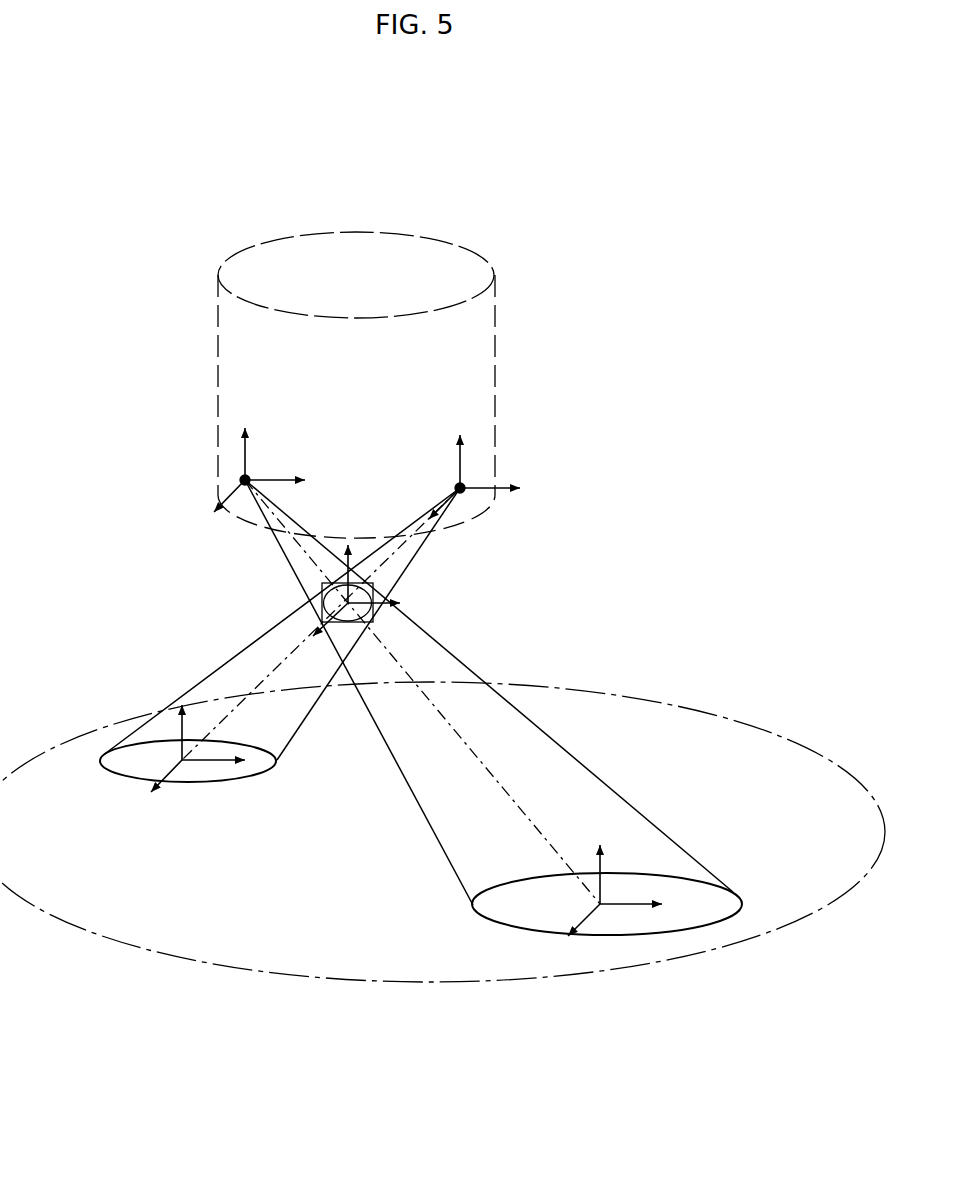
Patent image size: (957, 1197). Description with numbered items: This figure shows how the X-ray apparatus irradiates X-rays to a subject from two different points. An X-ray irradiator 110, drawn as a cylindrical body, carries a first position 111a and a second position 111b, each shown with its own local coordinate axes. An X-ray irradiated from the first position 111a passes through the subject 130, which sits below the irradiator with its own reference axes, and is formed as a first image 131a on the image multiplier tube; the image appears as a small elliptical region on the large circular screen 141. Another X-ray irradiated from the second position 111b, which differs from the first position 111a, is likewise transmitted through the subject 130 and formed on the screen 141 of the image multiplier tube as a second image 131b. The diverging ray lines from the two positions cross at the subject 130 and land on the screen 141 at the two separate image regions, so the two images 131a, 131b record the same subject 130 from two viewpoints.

The X-ray irradiator 110 is at (496, 305).
The first position 111a is at (210, 470).
The second position 111b is at (480, 470).
The subject 130 is at (374, 584).
The first image 131a is at (465, 906).
The second image 131b is at (247, 806).
The screen 141 is at (689, 700).